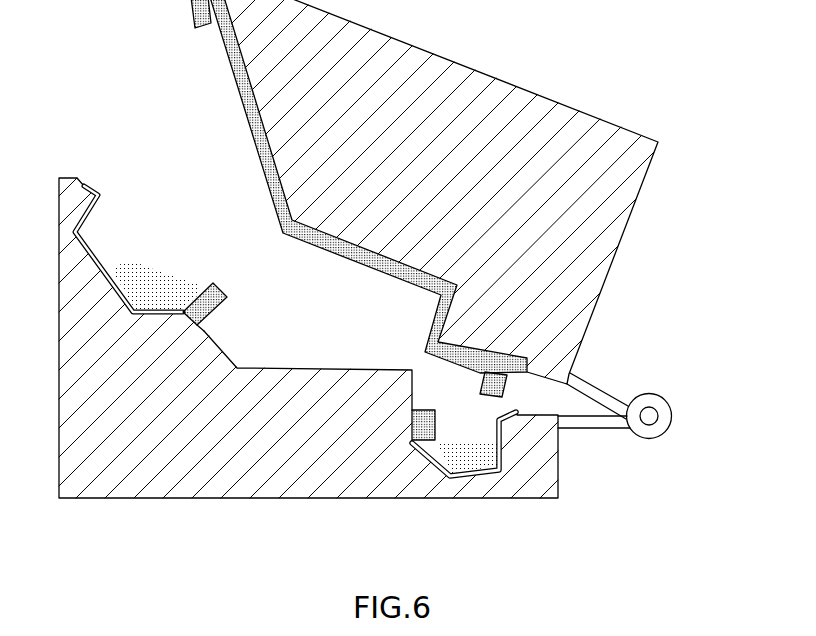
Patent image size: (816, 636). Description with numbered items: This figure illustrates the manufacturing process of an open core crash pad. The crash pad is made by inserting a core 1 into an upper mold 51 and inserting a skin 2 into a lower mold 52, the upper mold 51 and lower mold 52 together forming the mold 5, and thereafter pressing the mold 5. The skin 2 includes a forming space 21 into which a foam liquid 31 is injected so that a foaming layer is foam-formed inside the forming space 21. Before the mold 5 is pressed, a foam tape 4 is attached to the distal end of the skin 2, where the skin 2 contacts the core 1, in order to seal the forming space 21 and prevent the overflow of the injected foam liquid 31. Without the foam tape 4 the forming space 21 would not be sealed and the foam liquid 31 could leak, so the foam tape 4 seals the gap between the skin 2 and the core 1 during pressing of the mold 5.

The core 1 is at (235, 80).
The skin 2 is at (90, 192).
The forming space 21 is at (101, 245).
The foam liquid 31 is at (153, 290).
The foam tape 4 is at (193, 10).
The mold 5 is at (407, 249).
The upper mold 51 is at (588, 258).
The lower mold 52 is at (723, 243).